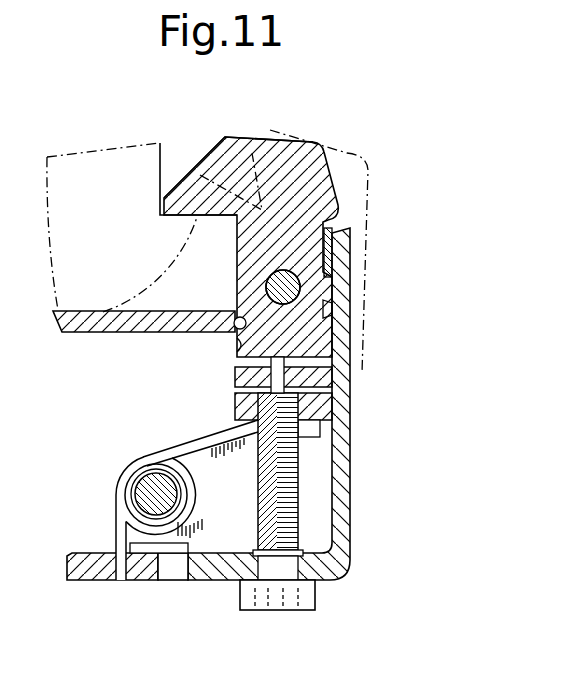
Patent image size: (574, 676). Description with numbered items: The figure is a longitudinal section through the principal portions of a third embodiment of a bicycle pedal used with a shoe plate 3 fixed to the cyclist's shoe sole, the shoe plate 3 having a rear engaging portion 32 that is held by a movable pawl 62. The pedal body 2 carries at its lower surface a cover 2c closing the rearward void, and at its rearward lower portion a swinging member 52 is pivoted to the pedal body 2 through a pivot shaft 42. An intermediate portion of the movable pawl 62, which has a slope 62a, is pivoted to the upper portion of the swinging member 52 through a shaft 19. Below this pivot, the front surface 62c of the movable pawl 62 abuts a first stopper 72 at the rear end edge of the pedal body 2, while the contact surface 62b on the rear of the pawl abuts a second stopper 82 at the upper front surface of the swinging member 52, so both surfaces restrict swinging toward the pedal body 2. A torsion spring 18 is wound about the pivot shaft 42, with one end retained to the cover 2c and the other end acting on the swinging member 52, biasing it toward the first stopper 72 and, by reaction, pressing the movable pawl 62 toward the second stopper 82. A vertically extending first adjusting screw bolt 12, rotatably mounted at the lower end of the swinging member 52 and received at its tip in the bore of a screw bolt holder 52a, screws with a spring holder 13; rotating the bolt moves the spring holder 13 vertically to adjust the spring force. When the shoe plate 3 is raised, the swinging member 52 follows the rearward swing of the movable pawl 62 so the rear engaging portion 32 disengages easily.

The pedal body 2 is at (85, 333).
The cover 2c is at (84, 582).
The shoe plate 3 is at (88, 151).
The first adjusting screw bolt 12 is at (280, 610).
The spring holder 13 is at (332, 406).
The spring 18 is at (200, 443).
The shaft 19 is at (292, 272).
The rear engaging portion 32 is at (178, 160).
The pivot shaft 42 is at (140, 480).
The swinging member 52 is at (350, 470).
The screw bolt holder 52a is at (324, 387).
The movable pawl 62 is at (328, 160).
The slope 62a is at (210, 145).
The contact surface 62b is at (333, 306).
The front surface 62c is at (237, 347).
The first stopper 72 is at (236, 329).
The second stopper 82 is at (328, 333).